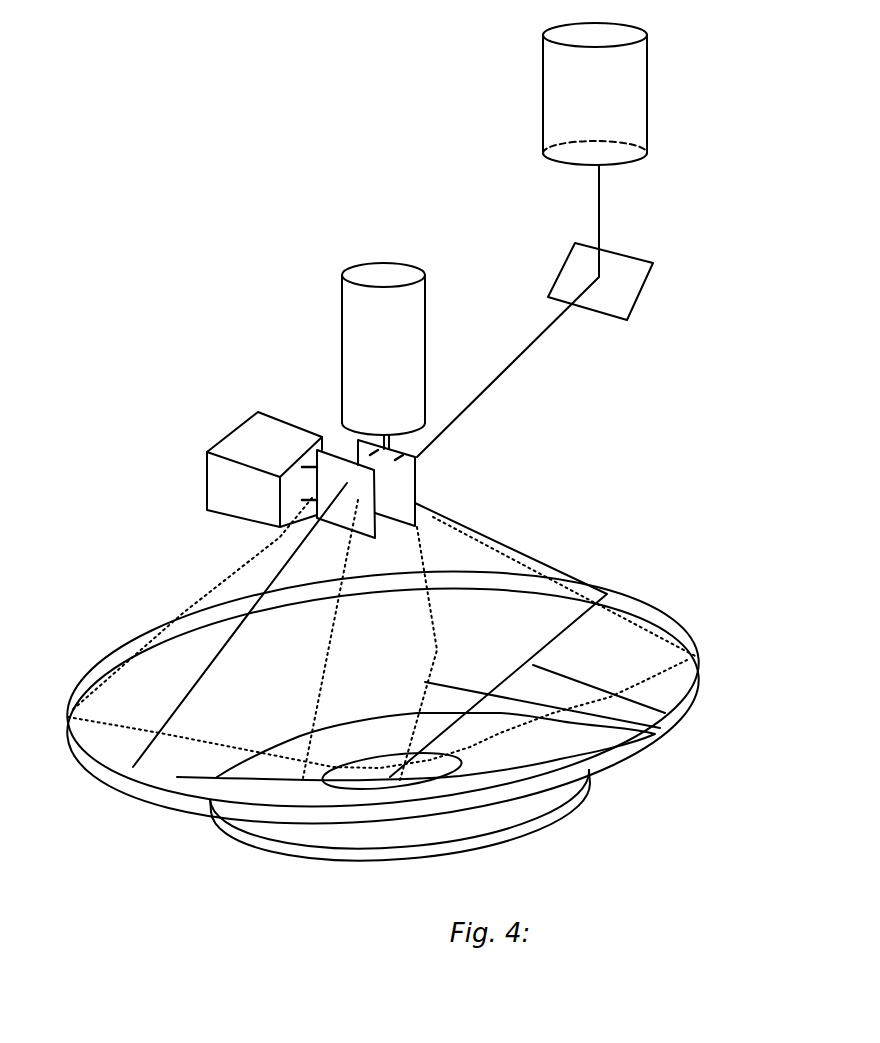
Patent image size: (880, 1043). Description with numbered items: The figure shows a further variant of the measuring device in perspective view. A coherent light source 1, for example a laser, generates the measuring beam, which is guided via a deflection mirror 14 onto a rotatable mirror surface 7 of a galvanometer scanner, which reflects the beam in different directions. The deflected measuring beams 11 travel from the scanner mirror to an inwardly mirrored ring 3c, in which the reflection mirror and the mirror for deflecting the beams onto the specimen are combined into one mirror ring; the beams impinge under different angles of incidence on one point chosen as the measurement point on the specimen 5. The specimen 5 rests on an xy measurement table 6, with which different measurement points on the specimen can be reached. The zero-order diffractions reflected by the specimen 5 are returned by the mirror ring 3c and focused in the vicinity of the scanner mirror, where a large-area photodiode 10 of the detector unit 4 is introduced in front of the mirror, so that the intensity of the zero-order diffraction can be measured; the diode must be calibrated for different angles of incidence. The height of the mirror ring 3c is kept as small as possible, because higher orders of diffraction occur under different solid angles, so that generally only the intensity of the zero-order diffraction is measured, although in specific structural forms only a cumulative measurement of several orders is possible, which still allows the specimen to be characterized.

The light source 1 is at (630, 80).
The deflection mirror 14 is at (633, 293).
The rotatable mirror surface 7 is at (405, 485).
The large-area photodiode 10 is at (338, 462).
The detector unit 4 is at (222, 495).
The mirror ring 3c is at (667, 597).
The measuring beam 11 is at (640, 683).
The specimen 5 is at (322, 782).
The xy measurement table 6 is at (548, 818).